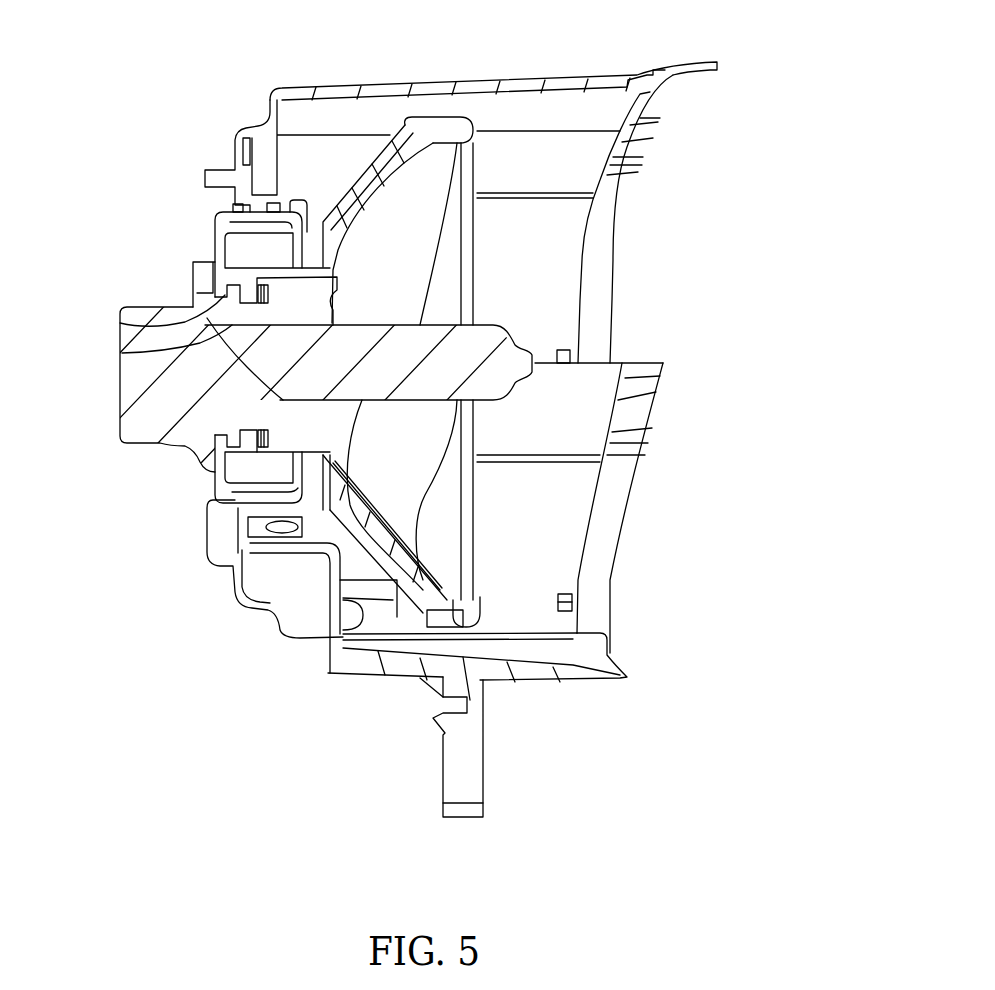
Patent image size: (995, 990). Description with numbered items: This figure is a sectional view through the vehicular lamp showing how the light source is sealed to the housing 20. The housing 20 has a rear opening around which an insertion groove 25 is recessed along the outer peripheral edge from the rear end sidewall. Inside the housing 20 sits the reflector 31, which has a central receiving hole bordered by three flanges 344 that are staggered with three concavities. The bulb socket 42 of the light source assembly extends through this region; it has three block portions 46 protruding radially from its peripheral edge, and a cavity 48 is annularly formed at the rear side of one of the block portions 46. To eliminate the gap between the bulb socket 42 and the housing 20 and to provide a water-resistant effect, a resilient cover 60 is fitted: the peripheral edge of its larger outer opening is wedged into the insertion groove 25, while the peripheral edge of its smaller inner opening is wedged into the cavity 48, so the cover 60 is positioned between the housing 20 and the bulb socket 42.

The housing 20 is at (345, 83).
The insertion groove 25 is at (313, 197).
The reflector 31 is at (405, 162).
The bulb socket 42 is at (202, 288).
The block portions 46 is at (120, 405).
The cavity 48 is at (120, 318).
The resilient cover 60 is at (248, 216).
The flanges 344 is at (122, 353).